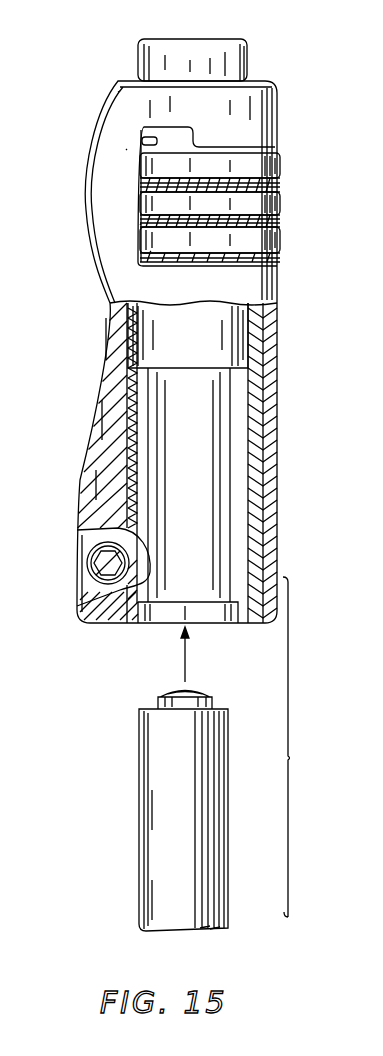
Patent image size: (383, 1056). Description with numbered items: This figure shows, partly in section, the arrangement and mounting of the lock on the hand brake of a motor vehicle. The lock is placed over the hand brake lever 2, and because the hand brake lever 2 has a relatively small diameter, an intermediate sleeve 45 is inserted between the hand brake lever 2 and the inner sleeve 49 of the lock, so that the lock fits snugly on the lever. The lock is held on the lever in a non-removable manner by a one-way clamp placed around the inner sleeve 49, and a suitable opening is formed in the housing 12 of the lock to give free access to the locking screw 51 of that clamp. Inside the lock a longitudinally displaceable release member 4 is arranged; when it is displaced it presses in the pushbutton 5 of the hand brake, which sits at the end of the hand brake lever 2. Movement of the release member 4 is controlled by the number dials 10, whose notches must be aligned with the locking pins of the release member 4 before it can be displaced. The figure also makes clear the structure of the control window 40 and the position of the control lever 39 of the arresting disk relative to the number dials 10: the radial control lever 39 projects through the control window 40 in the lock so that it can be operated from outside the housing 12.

The hand brake lever 2 is at (152, 846).
The release member 4 is at (150, 64).
The pushbutton 5 is at (168, 693).
The number dials 10 is at (278, 166).
The housing 12 is at (118, 413).
The control lever 39 is at (141, 139).
The control window 40 is at (168, 140).
The intermediate sleeve 45 is at (145, 450).
The inner sleeve 49 is at (135, 498).
The locking screw 51 is at (98, 562).